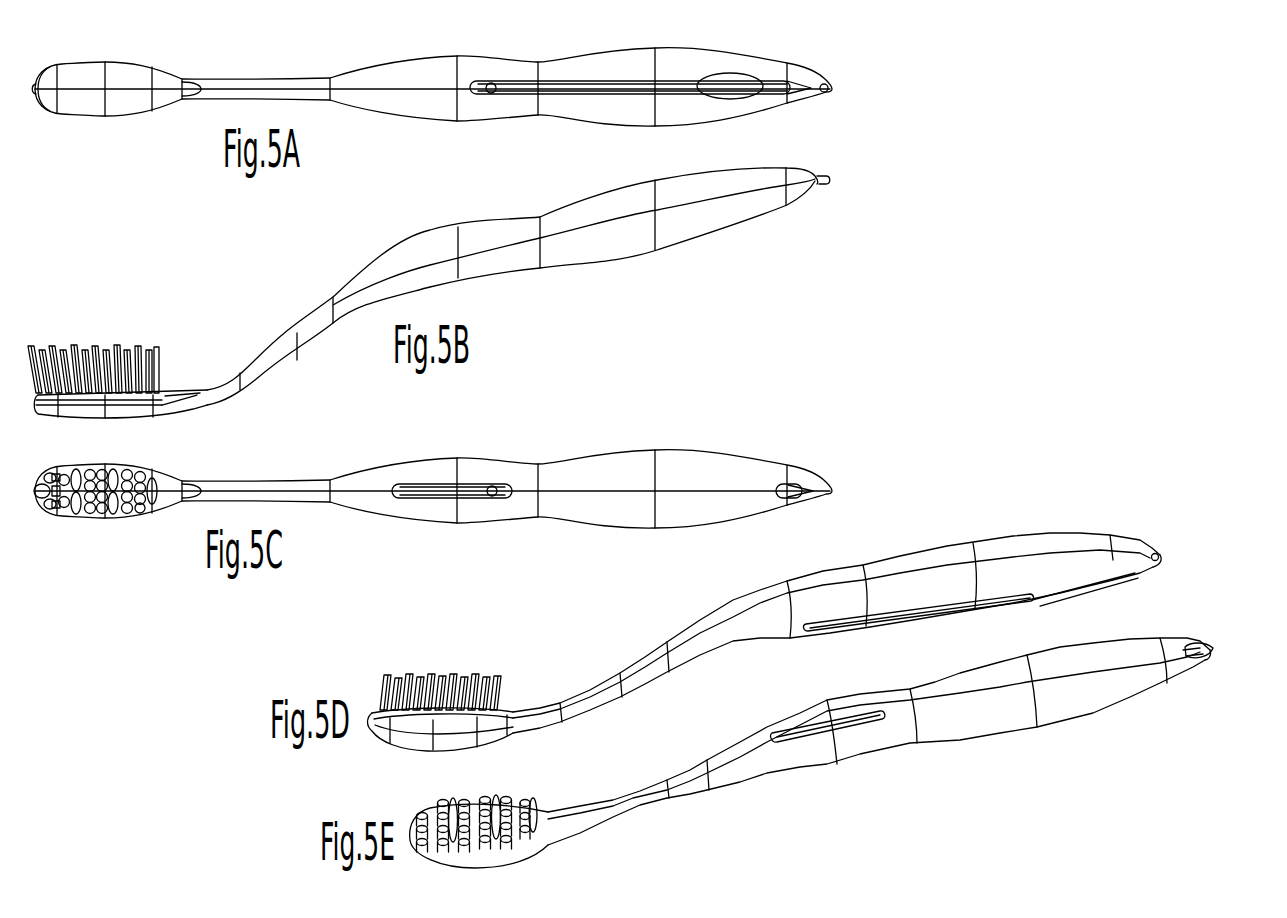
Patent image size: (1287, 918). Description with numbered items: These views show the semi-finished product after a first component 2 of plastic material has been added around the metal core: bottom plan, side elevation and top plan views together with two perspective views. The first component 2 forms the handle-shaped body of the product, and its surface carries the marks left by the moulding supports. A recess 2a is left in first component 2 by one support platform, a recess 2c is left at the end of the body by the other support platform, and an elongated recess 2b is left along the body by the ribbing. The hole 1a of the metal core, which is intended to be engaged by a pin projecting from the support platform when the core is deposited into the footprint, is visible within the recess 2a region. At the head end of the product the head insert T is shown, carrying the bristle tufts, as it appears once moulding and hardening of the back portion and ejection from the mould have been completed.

In FIG. 5A, the hole 1a is at (487, 88).
In FIG. 5C, the hole 1a is at (495, 488).
In FIG. 5B, the first component 2 is at (727, 220).
In FIG. 5C, the first component 2 is at (617, 468).
In FIG. 5D, the first component 2 is at (1020, 545).
In FIG. 5E, the first component 2 is at (1078, 698).
In FIG. 5C, the recess 2a is at (445, 487).
In FIG. 5E, the recess 2a is at (790, 737).
In FIG. 5A, the recess 2b is at (565, 88).
In FIG. 5D, the recess 2b is at (937, 610).
In FIG. 5C, the recess 2c is at (792, 489).
In FIG. 5E, the recess 2c is at (1193, 643).
In FIG. 5D, the head insert T is at (375, 690).